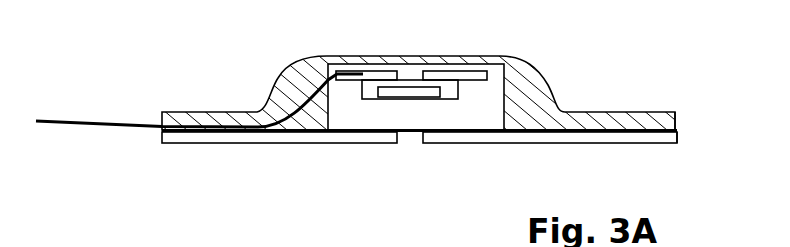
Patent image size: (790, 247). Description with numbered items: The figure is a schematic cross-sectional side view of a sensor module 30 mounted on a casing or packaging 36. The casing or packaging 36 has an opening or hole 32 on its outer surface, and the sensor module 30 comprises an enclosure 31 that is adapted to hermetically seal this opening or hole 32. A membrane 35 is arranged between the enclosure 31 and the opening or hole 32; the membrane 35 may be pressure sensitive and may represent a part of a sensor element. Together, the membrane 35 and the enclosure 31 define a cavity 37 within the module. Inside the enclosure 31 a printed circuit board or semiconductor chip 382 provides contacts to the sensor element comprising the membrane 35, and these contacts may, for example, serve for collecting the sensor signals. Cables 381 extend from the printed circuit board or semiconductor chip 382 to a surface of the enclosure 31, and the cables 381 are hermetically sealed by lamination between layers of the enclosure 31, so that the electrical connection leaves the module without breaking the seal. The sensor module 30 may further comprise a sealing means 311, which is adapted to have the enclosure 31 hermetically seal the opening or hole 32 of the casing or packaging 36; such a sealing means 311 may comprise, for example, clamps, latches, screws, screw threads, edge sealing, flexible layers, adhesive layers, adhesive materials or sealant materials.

The sensor module 30 is at (262, 24).
The enclosure 31 is at (538, 73).
The sealing means 311 is at (678, 128).
The opening or hole 32 is at (410, 135).
The membrane 35 is at (430, 99).
The casing or packaging 36 is at (677, 143).
The cavity 37 is at (392, 98).
The cables 381 is at (128, 118).
The printed circuit board or semiconductor chip 382 is at (385, 71).